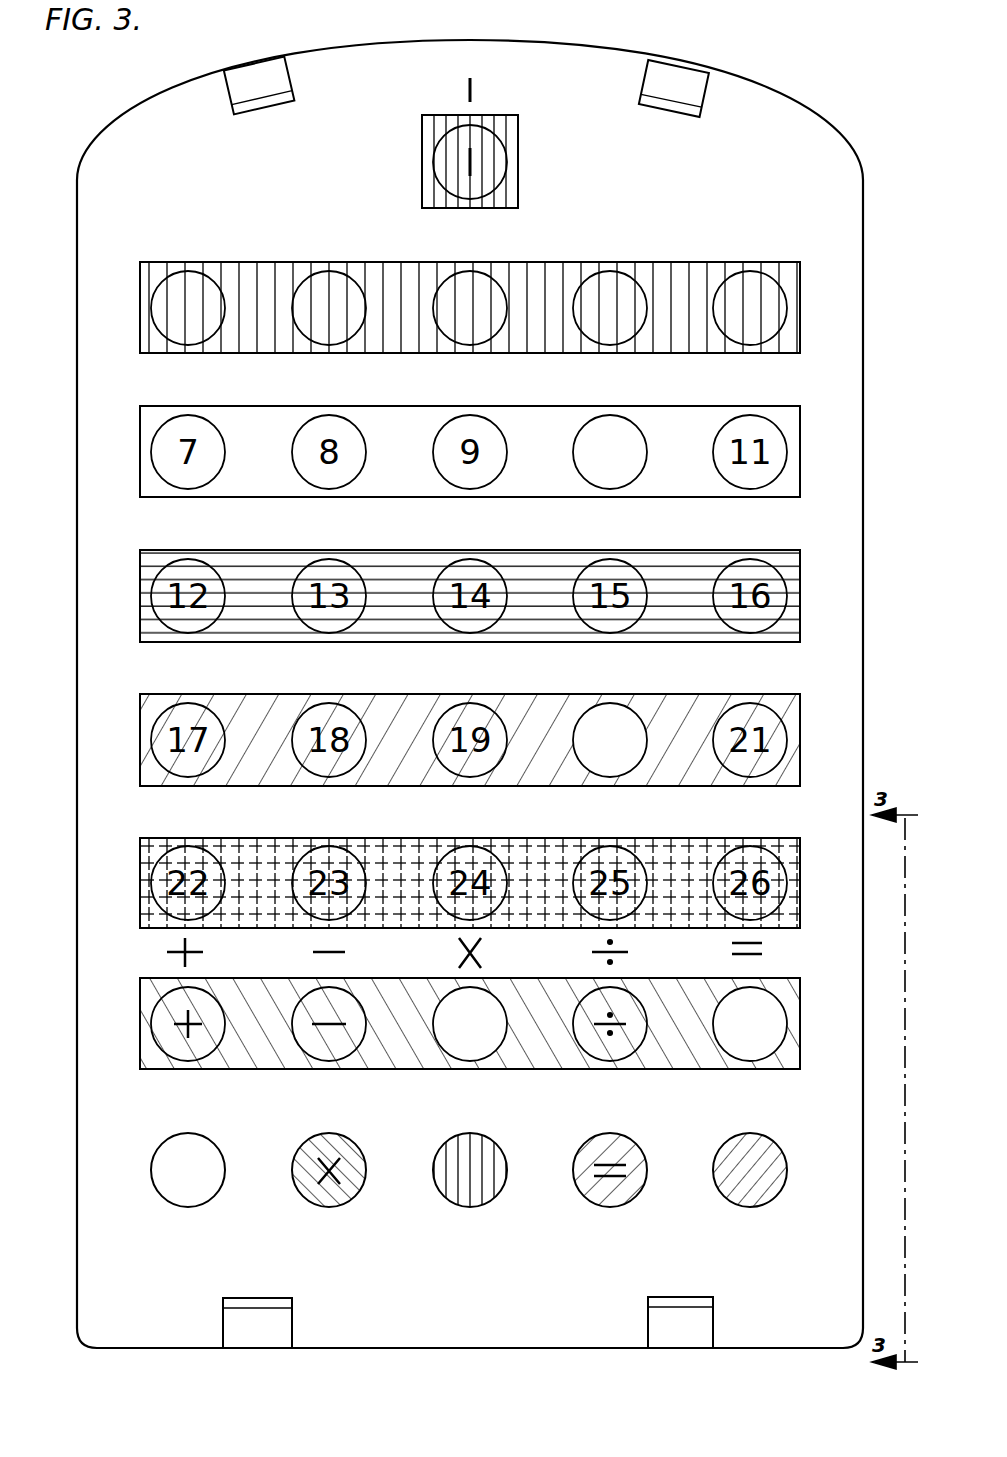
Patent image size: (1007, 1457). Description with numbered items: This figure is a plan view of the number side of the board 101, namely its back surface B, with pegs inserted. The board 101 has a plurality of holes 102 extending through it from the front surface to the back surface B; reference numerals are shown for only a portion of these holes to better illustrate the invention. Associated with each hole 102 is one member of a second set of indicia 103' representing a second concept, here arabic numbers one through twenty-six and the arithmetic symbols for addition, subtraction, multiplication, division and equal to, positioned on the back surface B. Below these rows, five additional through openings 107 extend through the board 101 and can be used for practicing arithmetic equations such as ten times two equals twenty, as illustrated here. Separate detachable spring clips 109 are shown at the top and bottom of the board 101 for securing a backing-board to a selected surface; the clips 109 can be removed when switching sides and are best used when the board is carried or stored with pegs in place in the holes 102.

The board 101 is at (757, 108).
The holes 102 is at (212, 290).
The second set of indicia 103' is at (430, 569).
The additional through openings 107 is at (305, 1192).
The spring clips 109 is at (257, 68).
The back surface B is at (146, 132).